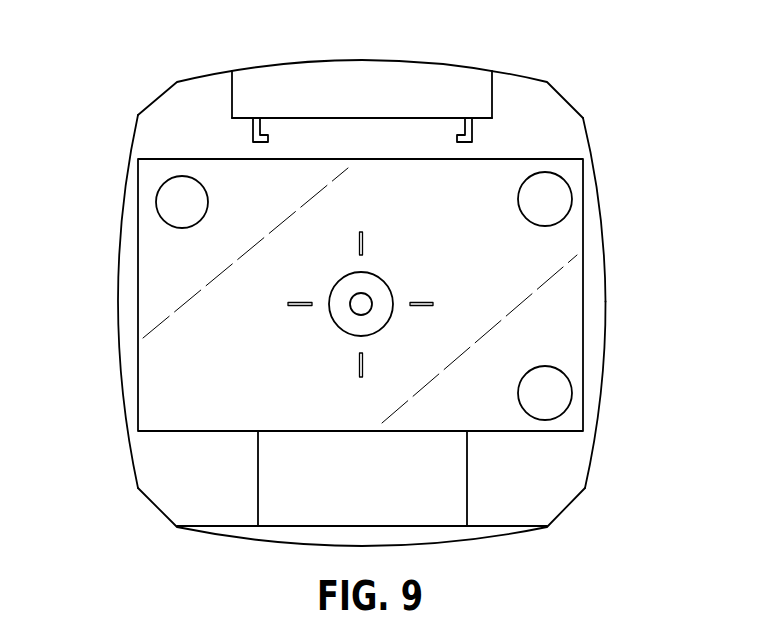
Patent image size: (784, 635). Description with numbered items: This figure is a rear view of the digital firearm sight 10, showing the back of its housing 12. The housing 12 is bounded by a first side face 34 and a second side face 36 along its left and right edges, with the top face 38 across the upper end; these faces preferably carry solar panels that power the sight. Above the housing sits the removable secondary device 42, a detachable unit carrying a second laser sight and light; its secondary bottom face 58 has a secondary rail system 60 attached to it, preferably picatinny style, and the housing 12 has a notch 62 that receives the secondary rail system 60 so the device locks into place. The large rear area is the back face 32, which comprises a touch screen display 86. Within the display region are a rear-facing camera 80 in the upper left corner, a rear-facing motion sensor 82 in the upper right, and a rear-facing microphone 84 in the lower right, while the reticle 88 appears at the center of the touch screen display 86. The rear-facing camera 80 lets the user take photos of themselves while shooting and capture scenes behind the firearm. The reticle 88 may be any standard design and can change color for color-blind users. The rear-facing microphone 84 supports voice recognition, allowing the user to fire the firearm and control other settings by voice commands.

The digital firearm sight 10 is at (702, 145).
The housing 12 is at (607, 306).
The back face 32 is at (522, 471).
The first side face 34 is at (605, 367).
The second side face 36 is at (118, 312).
The top face 38 is at (507, 72).
The removable secondary device 42 is at (293, 65).
The secondary bottom face 58 is at (380, 118).
The secondary rail system 60 is at (252, 132).
The notch 62 is at (492, 117).
The rear-facing camera 80 is at (163, 190).
The rear-facing motion sensor 82 is at (572, 192).
The rear-facing microphone 84 is at (572, 392).
The touch screen display 86 is at (512, 278).
The reticle 88 is at (388, 286).